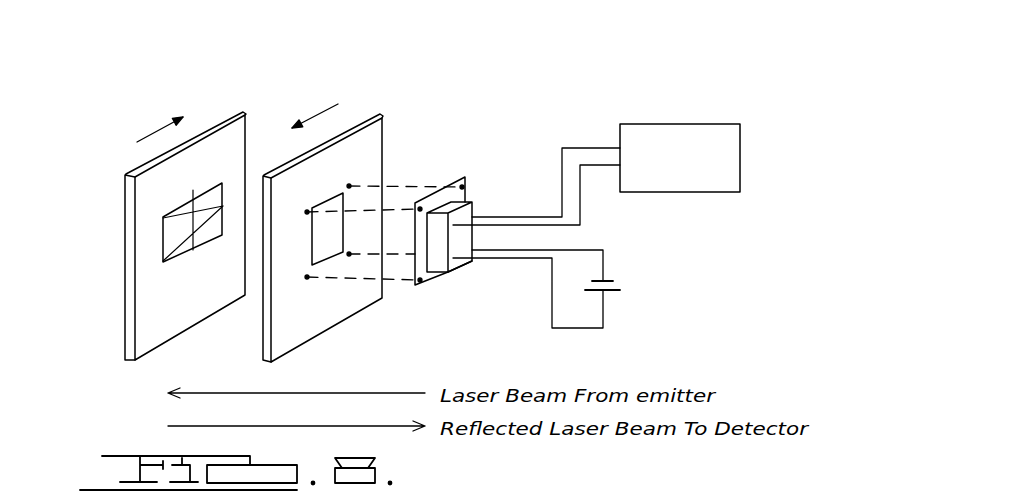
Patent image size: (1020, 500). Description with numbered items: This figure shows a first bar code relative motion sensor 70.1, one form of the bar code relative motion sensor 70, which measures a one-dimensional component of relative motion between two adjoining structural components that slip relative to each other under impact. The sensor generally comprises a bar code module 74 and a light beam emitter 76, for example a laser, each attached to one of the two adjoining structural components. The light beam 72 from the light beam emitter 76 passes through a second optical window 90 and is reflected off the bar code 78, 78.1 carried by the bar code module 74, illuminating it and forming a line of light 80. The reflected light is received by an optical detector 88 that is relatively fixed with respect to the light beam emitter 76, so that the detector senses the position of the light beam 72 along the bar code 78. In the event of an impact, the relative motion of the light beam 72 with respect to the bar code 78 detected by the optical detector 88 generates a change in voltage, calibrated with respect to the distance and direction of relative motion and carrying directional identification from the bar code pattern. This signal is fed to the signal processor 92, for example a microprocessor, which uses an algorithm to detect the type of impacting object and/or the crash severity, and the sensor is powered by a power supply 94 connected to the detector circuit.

The bar code relative motion sensor 70 is at (635, 194).
The first bar code relative motion sensor 70.1 is at (635, 194).
The light beam 72 is at (349, 235).
The bar code module 74 is at (232, 110).
The light beam emitter 76 is at (419, 198).
The bar code 78 is at (130, 273).
The reflective target (alternate) 78.1 is at (130, 273).
The line of light 80 is at (191, 239).
The optical detector 88 is at (460, 178).
The second optical window 90 is at (327, 252).
The signal processor 92 is at (740, 150).
The power supply 94 is at (623, 284).